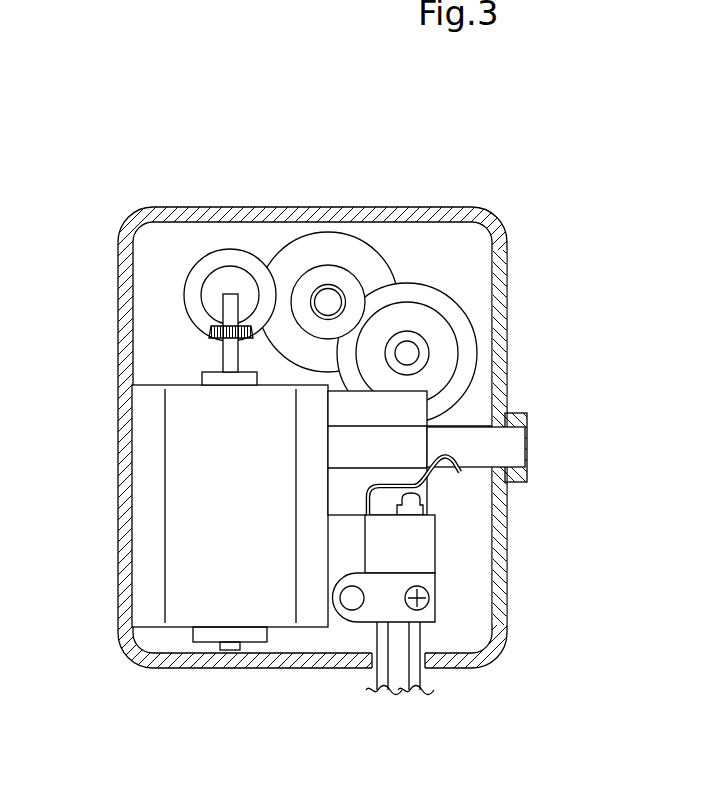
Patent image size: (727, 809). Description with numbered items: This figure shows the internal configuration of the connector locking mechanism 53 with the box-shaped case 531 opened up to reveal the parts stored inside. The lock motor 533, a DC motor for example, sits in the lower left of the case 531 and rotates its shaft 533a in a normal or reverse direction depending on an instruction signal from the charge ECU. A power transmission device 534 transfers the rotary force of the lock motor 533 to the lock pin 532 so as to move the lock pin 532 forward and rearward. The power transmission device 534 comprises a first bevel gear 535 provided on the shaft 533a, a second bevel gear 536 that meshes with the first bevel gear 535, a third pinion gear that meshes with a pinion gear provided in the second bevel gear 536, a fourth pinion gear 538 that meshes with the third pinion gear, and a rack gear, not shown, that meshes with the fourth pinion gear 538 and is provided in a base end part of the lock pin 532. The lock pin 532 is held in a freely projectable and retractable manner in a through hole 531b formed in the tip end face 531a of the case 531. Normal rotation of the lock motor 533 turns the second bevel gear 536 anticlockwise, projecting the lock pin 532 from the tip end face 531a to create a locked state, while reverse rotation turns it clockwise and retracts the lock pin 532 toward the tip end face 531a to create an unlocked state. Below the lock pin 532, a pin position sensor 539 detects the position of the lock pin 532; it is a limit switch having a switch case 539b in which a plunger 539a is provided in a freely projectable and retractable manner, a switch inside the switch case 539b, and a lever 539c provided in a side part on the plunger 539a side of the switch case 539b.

The connector locking mechanism 53 is at (86, 114).
The case 531 is at (374, 411).
The tip end face 531a is at (500, 375).
The through hole 531b is at (512, 459).
The lock pin 532 is at (518, 443).
The lock motor 533 is at (235, 447).
The shaft 533a is at (232, 352).
The power transmission device 534 is at (325, 262).
The first bevel gear 535 is at (205, 262).
The second bevel gear 536 is at (237, 239).
The fourth pinion gear 538 is at (390, 322).
The pin position sensor 539 is at (468, 575).
The plunger 539a is at (420, 498).
The switch case 539b is at (422, 537).
The lever 539c is at (433, 475).